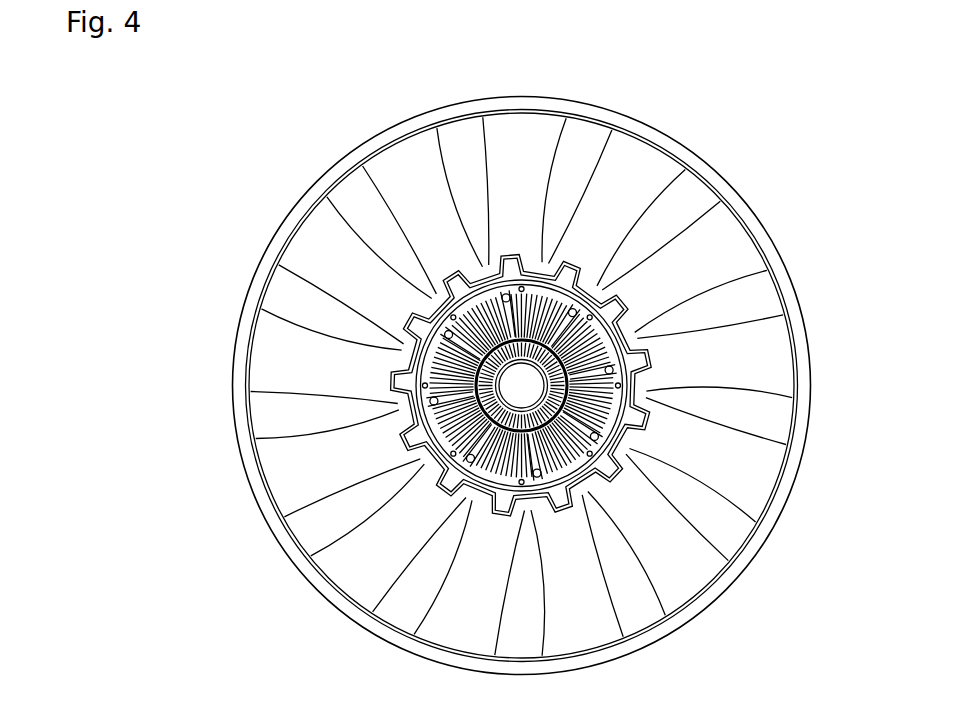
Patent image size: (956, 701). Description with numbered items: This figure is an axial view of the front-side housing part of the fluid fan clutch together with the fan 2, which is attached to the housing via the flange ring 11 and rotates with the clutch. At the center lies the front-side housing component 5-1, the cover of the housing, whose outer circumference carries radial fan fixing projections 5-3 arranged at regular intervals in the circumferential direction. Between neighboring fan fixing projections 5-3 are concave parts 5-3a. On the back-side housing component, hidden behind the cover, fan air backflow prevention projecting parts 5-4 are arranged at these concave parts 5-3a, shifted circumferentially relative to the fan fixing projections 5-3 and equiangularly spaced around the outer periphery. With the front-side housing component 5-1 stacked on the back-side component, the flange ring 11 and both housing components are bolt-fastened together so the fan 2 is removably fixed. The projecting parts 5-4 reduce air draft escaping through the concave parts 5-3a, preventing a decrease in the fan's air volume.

The fan 2 is at (633, 172).
The front-side housing component 5-1 is at (487, 256).
The fan fixing projections 5-3 is at (553, 264).
The concave parts 5-3a is at (480, 258).
The fan air backflow prevention projecting parts 5-4 is at (604, 289).
The flange ring 11 is at (597, 296).